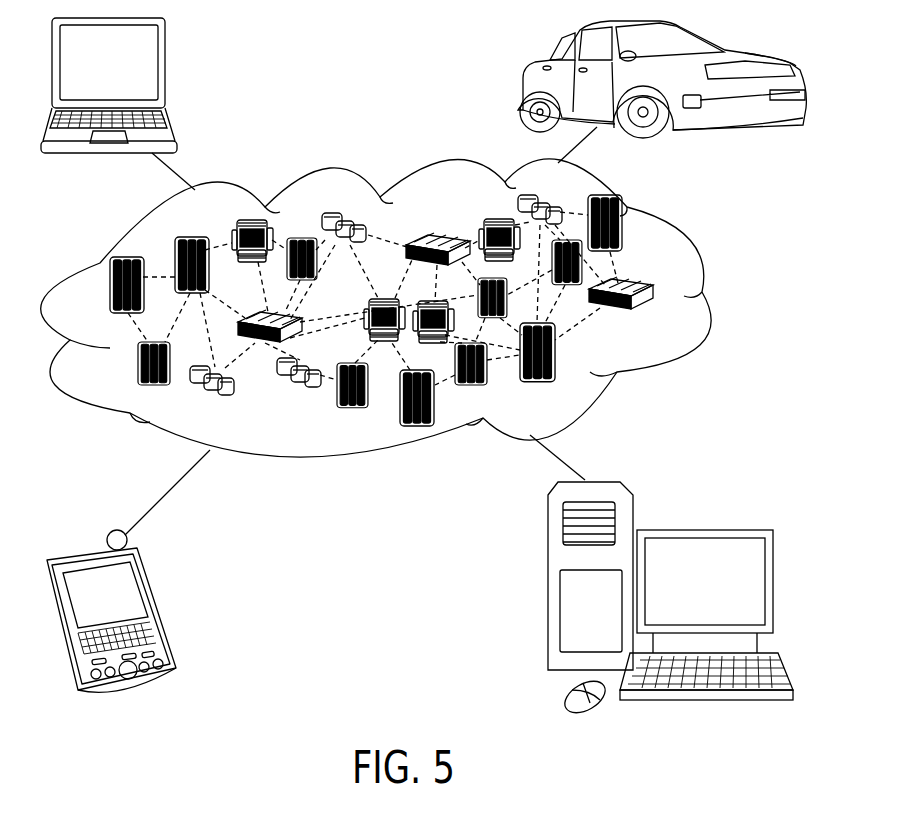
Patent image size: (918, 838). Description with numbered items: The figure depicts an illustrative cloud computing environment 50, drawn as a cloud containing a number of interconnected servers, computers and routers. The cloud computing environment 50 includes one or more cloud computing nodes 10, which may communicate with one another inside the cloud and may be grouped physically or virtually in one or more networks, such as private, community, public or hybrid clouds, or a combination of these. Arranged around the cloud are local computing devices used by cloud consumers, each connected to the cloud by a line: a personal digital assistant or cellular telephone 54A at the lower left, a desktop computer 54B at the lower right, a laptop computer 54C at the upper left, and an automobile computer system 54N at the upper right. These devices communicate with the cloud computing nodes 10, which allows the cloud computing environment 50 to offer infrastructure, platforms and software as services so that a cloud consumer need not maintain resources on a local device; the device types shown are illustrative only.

The cloud computing node 10 is at (677, 324).
The cloud computing environment 50 is at (702, 291).
The personal digital assistant or cellular telephone 54A is at (158, 605).
The desktop computer 54B is at (703, 528).
The laptop computer 54C is at (167, 63).
The automobile computer system 54N is at (523, 80).